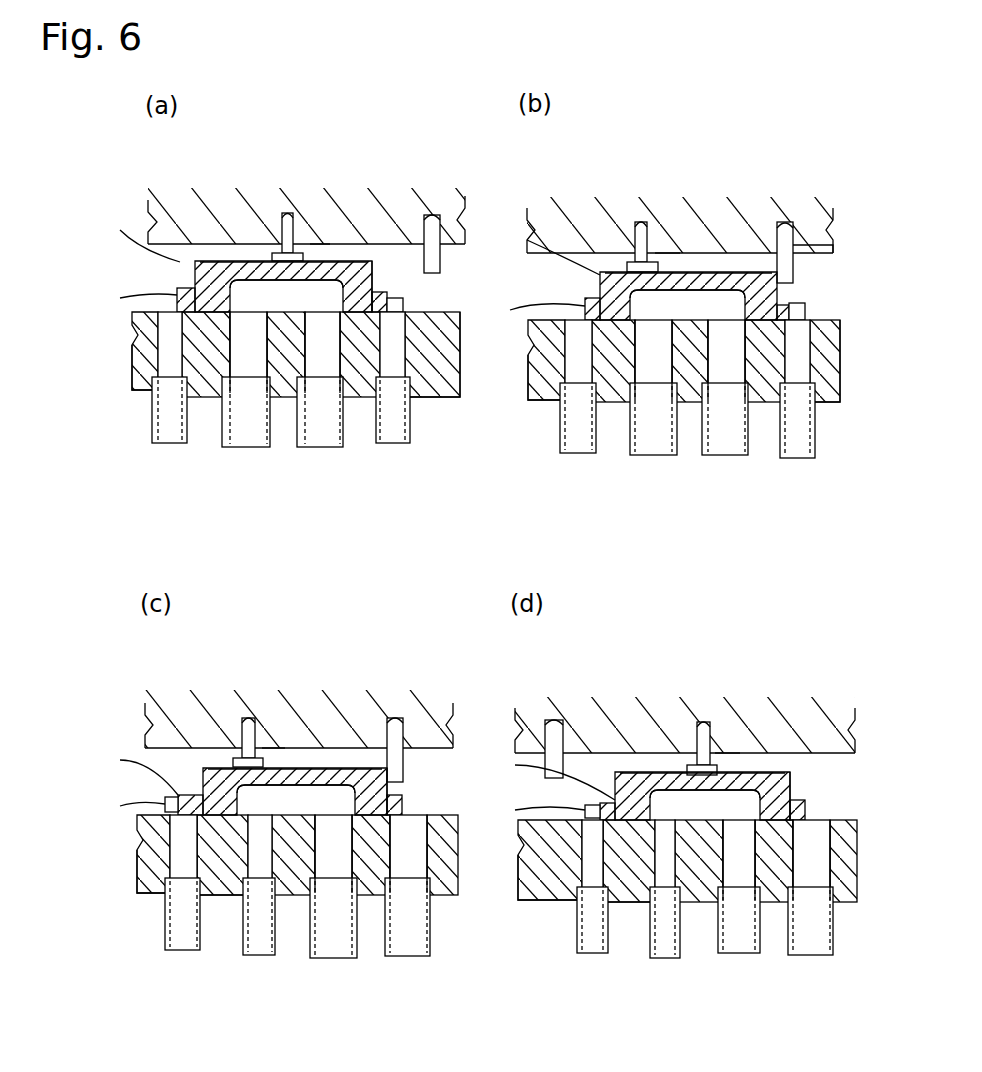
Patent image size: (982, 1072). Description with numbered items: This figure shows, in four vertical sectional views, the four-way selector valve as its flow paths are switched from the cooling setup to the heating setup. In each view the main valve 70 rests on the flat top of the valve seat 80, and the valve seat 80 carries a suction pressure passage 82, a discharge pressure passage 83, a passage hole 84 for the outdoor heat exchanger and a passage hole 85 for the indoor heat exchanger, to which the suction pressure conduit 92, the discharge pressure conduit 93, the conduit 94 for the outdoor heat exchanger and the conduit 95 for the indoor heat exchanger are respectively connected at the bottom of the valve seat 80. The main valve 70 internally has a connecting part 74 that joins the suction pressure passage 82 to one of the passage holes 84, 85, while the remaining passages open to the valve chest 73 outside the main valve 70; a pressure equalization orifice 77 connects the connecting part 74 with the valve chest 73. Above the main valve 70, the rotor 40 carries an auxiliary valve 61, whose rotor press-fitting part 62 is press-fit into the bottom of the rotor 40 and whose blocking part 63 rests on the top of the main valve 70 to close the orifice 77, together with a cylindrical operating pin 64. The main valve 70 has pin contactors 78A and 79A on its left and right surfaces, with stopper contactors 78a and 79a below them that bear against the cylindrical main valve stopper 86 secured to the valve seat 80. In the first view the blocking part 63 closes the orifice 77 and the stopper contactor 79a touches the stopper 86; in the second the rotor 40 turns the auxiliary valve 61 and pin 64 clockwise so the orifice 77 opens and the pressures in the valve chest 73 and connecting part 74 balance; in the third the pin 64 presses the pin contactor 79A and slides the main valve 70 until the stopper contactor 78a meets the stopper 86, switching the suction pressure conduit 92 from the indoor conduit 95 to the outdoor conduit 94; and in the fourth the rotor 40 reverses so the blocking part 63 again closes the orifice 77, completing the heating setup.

The rotor 40 is at (440, 186).
The auxiliary valve 61 is at (305, 242).
The rotor press-fitting part 62 is at (296, 252).
The blocking part for the pressure equalization orifice 63 is at (277, 250).
The operating pin 64 is at (443, 230).
The main valve 70 is at (212, 262).
The valve chest 73 is at (243, 262).
The connecting part 74 is at (181, 282).
The pressure equalization orifice 77 is at (286, 276).
The pin contactor 78A is at (192, 264).
The stopper contactor 78a is at (175, 296).
The pin contactor 79A is at (391, 255).
The stopper contactor 79a is at (402, 306).
The valve seat 80 is at (128, 346).
The suction pressure passage 82 is at (247, 352).
The discharge pressure passage 83 is at (423, 400).
The passage hole for the outdoor heat exchanger 84 is at (165, 357).
The passage hole for the indoor heat exchanger 85 is at (325, 352).
The main valve stopper 86 is at (403, 300).
The suction pressure conduit 92 is at (255, 445).
The discharge pressure conduit 93 is at (392, 445).
The conduit for the outdoor heat exchanger 94 is at (167, 430).
The conduit for the indoor heat exchanger 95 is at (330, 445).